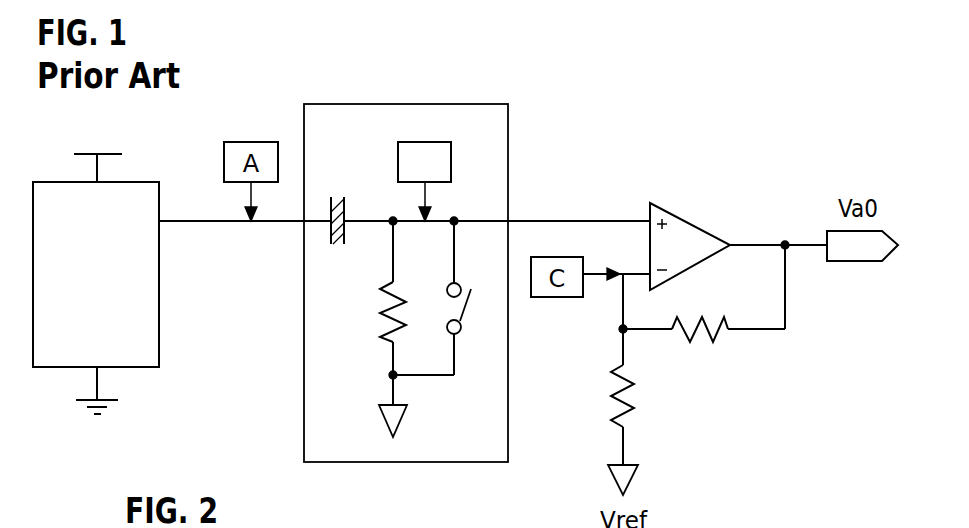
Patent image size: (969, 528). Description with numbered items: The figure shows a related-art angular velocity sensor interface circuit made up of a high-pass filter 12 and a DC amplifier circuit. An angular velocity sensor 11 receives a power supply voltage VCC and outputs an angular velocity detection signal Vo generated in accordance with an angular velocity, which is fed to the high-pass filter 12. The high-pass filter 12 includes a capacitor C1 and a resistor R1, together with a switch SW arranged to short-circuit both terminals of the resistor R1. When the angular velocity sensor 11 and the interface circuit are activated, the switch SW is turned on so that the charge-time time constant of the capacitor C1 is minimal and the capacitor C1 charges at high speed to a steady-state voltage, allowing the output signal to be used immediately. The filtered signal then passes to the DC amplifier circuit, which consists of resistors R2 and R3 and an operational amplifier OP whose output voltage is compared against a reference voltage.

The angular velocity sensor 11 is at (159, 182).
The high-pass filter 12 is at (508, 104).
The capacitor C1 is at (336, 202).
The resistor R1 is at (374, 298).
The switch SW is at (475, 298).
The operational amplifier OP is at (688, 222).
The resistor R2 is at (640, 430).
The resistor R3 is at (704, 293).